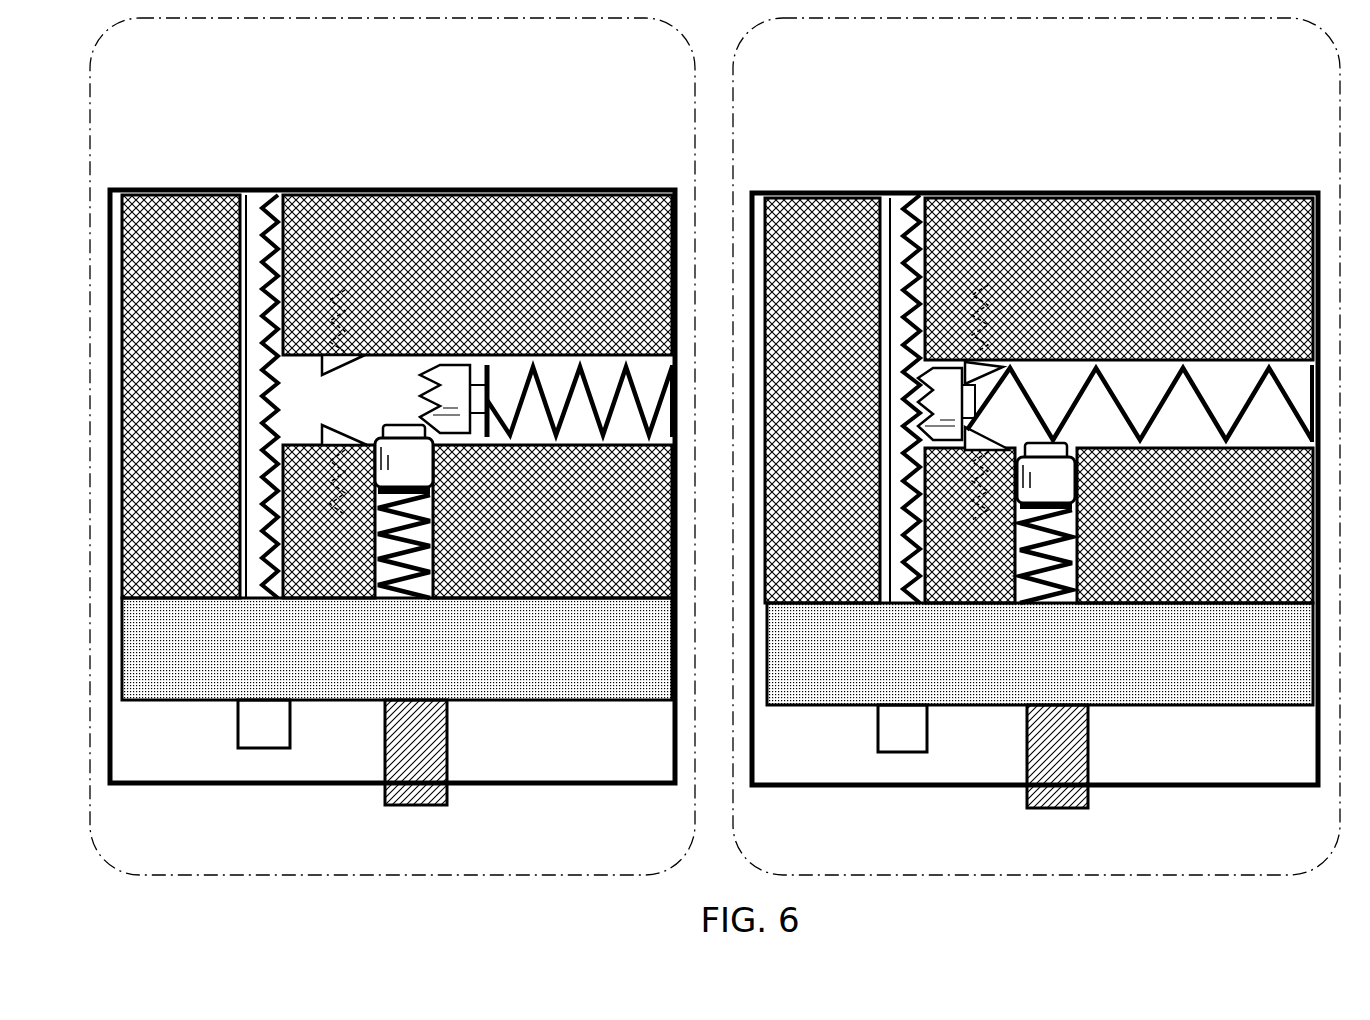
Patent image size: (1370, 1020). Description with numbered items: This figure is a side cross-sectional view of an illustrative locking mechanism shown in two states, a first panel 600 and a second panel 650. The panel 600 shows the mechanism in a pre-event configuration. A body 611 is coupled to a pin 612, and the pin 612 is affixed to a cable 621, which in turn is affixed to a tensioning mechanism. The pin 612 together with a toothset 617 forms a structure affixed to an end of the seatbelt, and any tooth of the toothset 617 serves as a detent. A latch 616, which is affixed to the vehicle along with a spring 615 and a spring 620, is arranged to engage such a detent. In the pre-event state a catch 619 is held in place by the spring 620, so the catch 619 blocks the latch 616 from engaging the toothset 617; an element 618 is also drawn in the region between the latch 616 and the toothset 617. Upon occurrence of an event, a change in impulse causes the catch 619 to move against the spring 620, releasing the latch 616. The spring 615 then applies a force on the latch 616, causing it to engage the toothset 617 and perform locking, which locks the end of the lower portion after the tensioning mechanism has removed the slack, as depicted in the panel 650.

The panel 600 is at (392, 446).
The actuator in second state 650 is at (1036, 446).
The body 611 is at (717, 399).
The pin 612 is at (717, 651).
The spring 615 is at (510, 368).
The latch 616 is at (448, 372).
The toothset 617 is at (268, 192).
The detent wedge 618 is at (330, 355).
The catch 619 is at (405, 425).
The spring 620 is at (372, 598).
The cable 621 is at (447, 800).